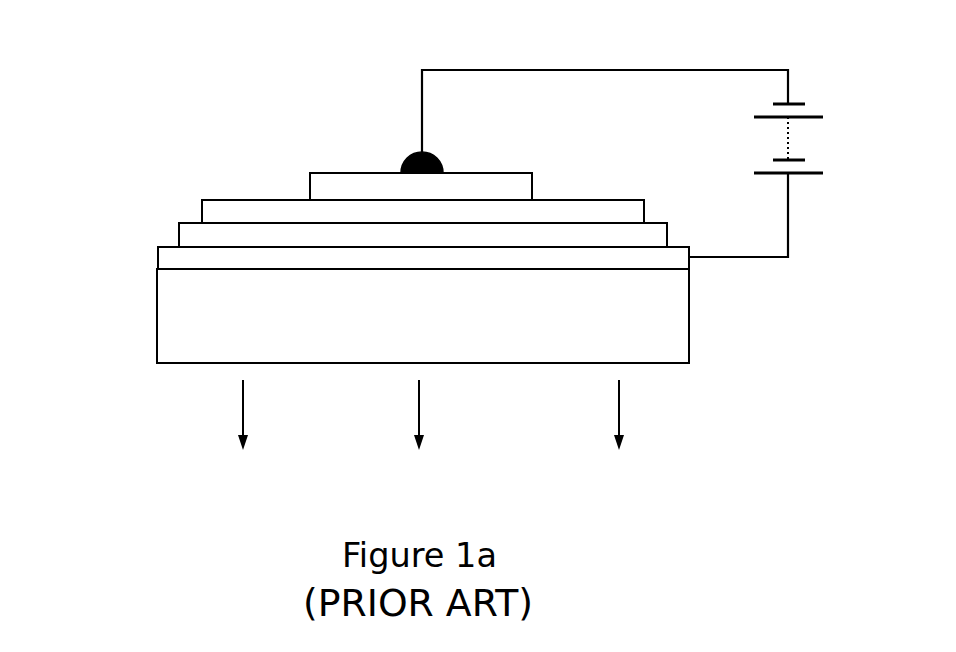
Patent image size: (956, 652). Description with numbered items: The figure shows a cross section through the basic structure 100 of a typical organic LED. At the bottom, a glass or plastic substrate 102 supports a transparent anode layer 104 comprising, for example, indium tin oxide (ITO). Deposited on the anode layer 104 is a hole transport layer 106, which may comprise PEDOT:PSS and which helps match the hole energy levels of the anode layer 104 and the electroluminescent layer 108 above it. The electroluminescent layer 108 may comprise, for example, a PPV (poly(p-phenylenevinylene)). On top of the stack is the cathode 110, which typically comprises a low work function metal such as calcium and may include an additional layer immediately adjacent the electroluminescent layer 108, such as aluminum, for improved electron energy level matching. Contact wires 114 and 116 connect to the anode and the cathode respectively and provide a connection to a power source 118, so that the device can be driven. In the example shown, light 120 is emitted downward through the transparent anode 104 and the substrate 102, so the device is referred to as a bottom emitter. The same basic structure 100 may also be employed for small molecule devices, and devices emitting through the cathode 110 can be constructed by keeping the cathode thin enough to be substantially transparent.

The basic structure 100 is at (131, 421).
The substrate 102 is at (157, 330).
The transparent anode layer 104 is at (157, 257).
The hole transport layer 106 is at (178, 233).
The electroluminescent layer 108 is at (202, 212).
The cathode 110 is at (310, 187).
The contact wire 114 is at (732, 258).
The contact wire 116 is at (622, 69).
The power source 118 is at (793, 102).
The light 120 is at (621, 419).